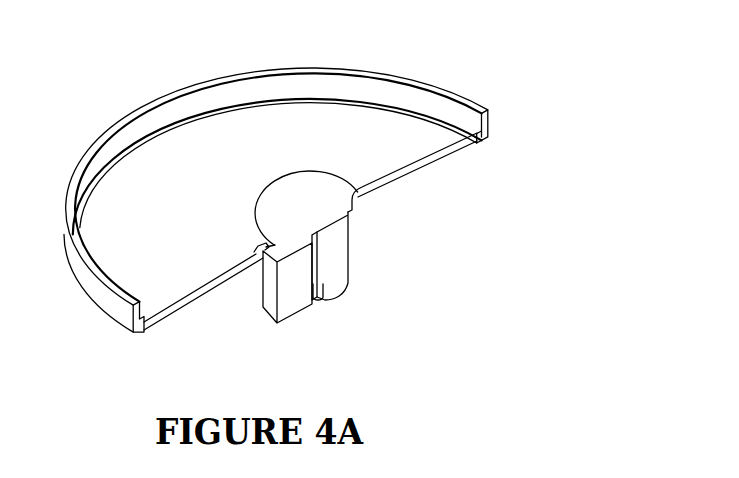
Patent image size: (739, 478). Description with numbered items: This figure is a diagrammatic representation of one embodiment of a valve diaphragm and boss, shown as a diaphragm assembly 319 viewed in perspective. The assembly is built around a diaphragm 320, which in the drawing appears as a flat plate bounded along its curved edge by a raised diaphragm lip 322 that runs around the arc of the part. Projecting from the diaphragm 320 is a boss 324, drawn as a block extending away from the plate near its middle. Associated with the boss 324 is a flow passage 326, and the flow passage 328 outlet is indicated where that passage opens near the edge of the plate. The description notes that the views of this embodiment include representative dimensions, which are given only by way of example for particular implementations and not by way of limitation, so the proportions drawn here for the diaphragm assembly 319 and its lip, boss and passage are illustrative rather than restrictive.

The diaphragm assembly 319 is at (322, 215).
The diaphragm 320 is at (398, 150).
The diaphragm lip 322 is at (489, 131).
The boss 324 is at (335, 275).
The flow passage 326 is at (322, 299).
The flow passage outlet 328 is at (258, 256).